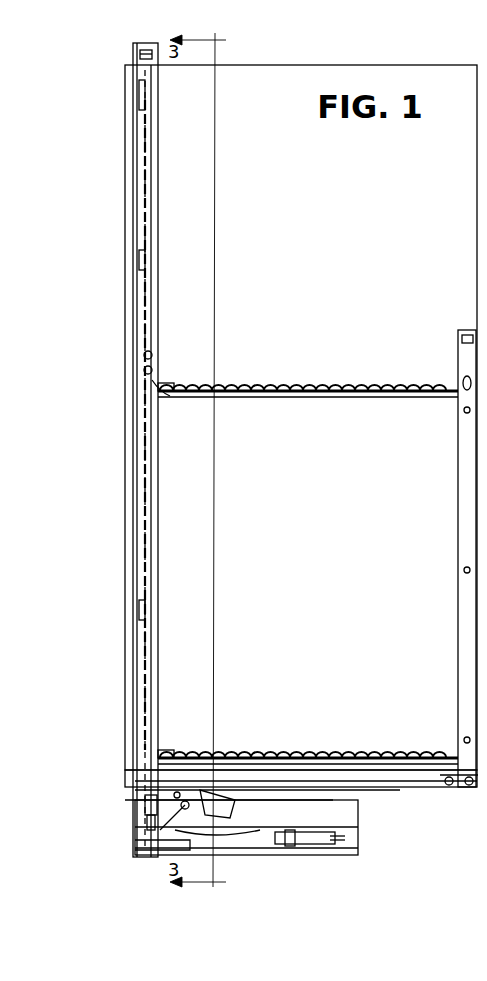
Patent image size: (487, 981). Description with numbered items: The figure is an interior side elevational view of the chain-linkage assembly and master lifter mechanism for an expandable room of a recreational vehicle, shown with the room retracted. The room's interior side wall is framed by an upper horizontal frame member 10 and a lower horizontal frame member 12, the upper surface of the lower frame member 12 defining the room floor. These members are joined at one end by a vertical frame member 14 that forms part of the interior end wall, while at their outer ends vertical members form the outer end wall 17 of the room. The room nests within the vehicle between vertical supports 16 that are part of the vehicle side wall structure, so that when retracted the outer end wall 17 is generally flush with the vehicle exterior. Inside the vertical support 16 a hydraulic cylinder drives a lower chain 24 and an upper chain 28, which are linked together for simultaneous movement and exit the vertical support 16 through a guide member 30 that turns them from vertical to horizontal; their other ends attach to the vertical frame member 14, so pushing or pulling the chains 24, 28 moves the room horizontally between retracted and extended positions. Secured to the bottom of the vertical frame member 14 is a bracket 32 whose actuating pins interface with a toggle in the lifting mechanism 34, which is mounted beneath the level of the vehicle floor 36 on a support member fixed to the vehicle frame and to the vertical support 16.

The upper horizontal frame member 10 is at (278, 68).
The lower horizontal frame member 12 is at (407, 787).
The vertical frame member 14 is at (458, 513).
The vertical support 16 is at (140, 212).
The outer end wall 17 is at (132, 472).
The lower chain 24 is at (300, 752).
The upper chain 28 is at (282, 385).
The guide member 30 is at (166, 386).
The bracket 32 is at (445, 790).
The lifting mechanism 34 is at (126, 806).
The vehicle floor 36 is at (333, 797).